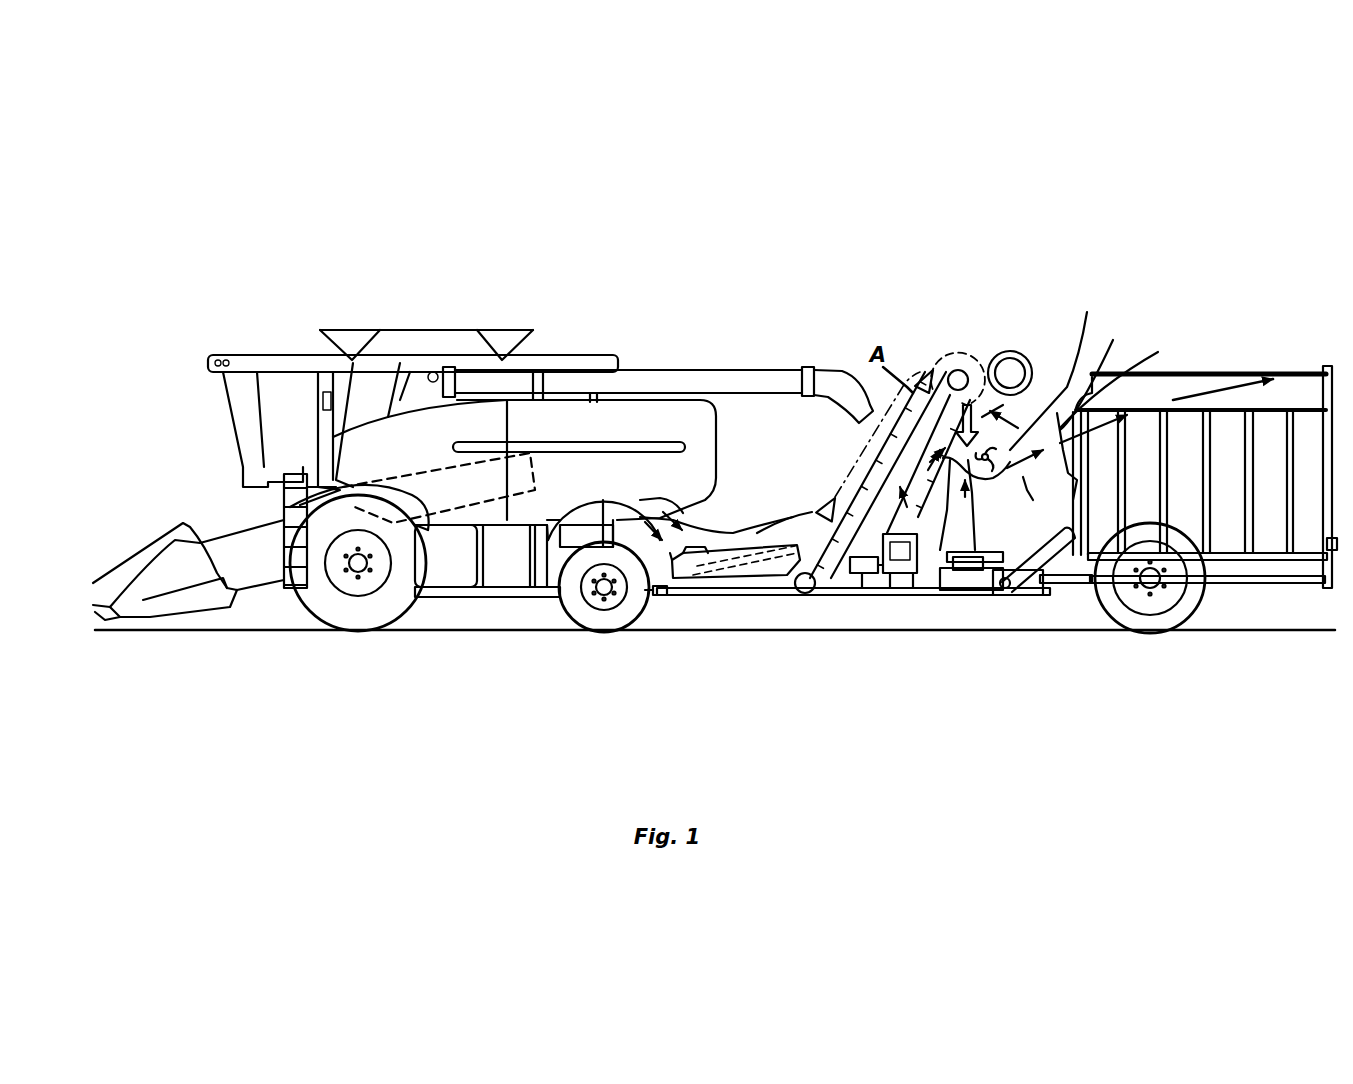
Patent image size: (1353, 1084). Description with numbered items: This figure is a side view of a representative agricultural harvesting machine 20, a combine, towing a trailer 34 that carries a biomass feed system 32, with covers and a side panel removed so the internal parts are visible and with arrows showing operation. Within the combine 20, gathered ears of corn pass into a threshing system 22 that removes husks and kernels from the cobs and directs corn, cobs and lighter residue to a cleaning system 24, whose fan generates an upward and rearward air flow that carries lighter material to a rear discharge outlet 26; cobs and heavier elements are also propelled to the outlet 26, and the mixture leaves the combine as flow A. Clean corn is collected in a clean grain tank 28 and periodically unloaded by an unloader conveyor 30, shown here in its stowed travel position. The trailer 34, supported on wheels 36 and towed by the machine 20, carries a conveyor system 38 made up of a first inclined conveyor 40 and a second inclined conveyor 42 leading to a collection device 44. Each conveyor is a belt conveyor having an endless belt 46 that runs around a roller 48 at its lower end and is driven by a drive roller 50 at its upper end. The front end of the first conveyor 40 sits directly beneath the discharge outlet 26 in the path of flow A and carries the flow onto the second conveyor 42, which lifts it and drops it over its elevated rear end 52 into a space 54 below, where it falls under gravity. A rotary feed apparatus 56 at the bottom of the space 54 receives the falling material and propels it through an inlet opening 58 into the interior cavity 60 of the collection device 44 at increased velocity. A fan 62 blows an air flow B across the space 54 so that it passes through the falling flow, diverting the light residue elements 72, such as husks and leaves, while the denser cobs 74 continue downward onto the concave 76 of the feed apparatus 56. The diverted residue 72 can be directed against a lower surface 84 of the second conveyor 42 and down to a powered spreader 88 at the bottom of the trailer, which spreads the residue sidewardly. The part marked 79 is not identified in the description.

The agricultural harvesting machine 20 is at (686, 250).
The threshing system 22 is at (410, 470).
The cleaning system 24 is at (503, 598).
The rear discharge outlet 26 is at (690, 522).
The clean grain tank 28 is at (507, 328).
The unloader conveyor 30 is at (750, 366).
The biomass feed system 32 is at (1000, 322).
The trailer 34 is at (978, 598).
The wheels 36 is at (1213, 598).
The conveyor system 38 is at (952, 360).
The first inclined conveyor 40 is at (750, 603).
The second inclined conveyor 42 is at (830, 598).
The collection device 44 is at (1205, 461).
The endless belt 46 is at (800, 550).
The roller 48 is at (668, 598).
The drive roller 50 is at (966, 342).
The elevated rear end 52 is at (967, 347).
The space 54 is at (1014, 350).
The rotary feed apparatus 56 is at (962, 598).
The inlet opening 58 is at (1101, 386).
The interior cavity 60 is at (1166, 384).
The fan 62 is at (1060, 374).
The biomass residue elements 72 is at (925, 503).
The cobs 74 is at (1223, 372).
The concave 76 is at (1050, 598).
The trailer tongue 79 is at (1080, 482).
The lower surface 84 is at (860, 598).
The powered spreader 88 is at (890, 598).